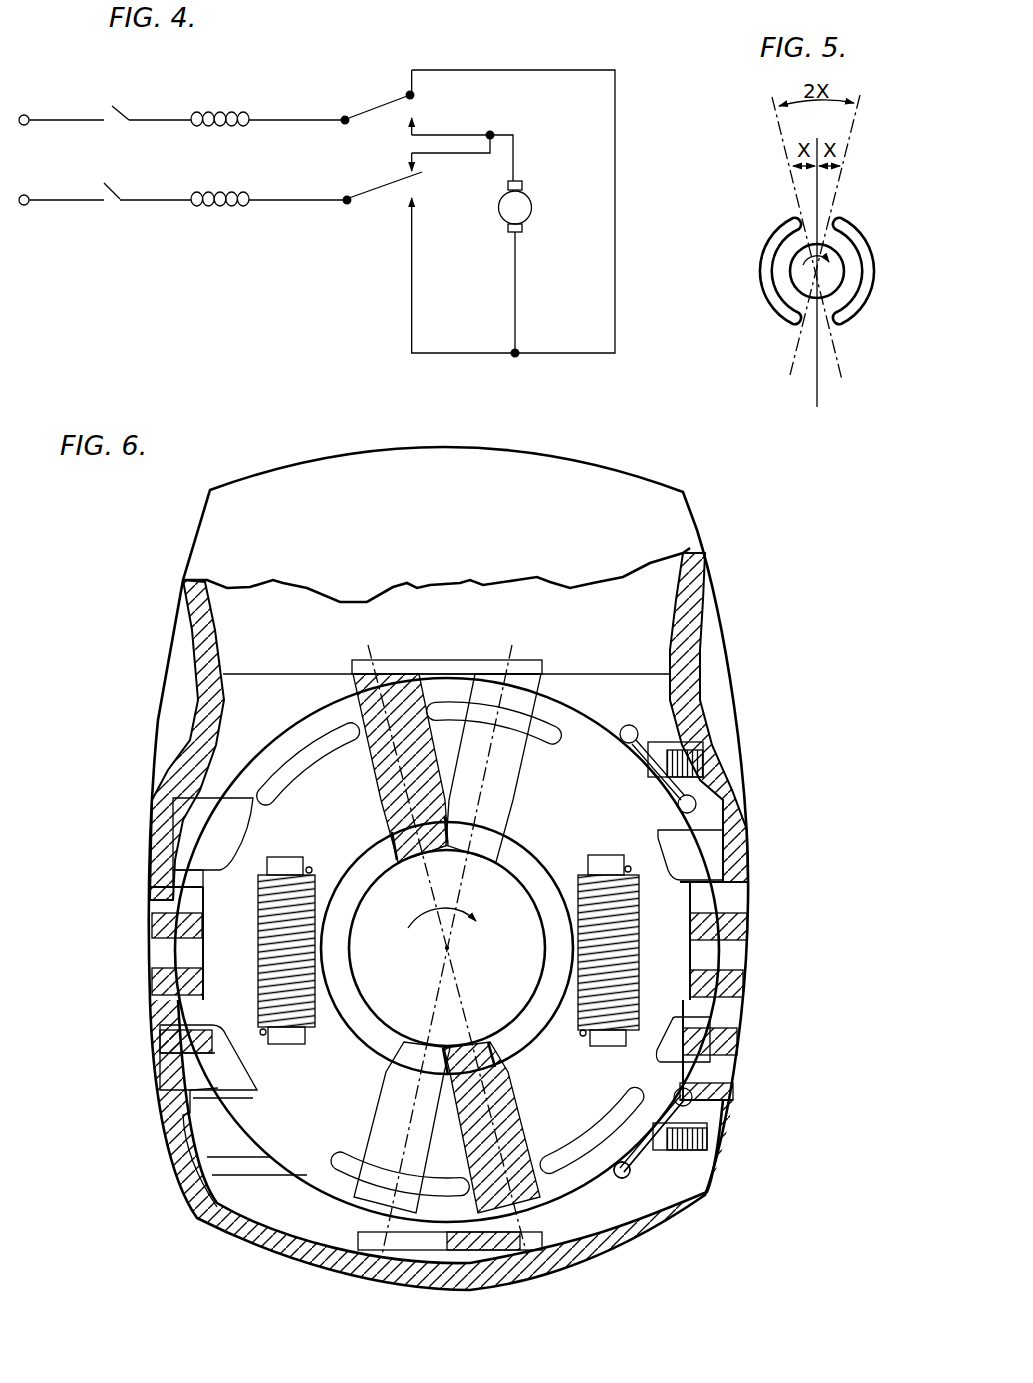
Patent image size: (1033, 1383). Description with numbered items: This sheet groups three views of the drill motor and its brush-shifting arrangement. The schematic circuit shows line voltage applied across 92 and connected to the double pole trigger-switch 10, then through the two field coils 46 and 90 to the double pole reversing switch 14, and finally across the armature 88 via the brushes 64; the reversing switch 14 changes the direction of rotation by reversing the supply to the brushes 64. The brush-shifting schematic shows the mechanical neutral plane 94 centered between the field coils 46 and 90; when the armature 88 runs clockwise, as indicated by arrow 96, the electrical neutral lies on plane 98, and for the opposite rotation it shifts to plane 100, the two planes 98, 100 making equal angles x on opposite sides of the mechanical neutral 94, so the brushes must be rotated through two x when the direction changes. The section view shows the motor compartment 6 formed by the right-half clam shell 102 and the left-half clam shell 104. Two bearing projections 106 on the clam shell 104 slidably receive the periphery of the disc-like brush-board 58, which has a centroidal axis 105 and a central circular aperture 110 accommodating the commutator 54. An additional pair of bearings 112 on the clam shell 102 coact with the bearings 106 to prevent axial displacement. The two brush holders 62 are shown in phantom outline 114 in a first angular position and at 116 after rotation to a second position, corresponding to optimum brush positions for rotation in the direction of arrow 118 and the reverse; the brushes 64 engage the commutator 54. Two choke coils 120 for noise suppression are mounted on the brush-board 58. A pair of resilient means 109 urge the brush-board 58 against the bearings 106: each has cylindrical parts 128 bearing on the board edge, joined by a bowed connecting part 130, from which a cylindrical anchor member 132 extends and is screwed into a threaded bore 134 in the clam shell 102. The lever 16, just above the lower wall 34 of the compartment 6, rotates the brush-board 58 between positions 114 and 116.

In FIG. 6, the motor compartment 6 is at (579, 457).
In FIG. 4, the trigger-switch 10 is at (109, 209).
In FIG. 4, the reversing switch 14 is at (376, 109).
In FIG. 6, the lever 16 is at (522, 1234).
In FIG. 6, the lower wall 34 is at (552, 1276).
In FIG. 4, the field coil 46 is at (257, 118).
In FIG. 5, the field coil 46 is at (774, 313).
In FIG. 6, the commutator 54 is at (414, 975).
In FIG. 6, the brush-board 58 is at (680, 905).
In FIG. 6, the brush holder 62 is at (378, 828).
In FIG. 4, the brush 64 is at (524, 184).
In FIG. 6, the brush 64 is at (410, 848).
In FIG. 4, the armature 88 is at (497, 209).
In FIG. 5, the armature 88 is at (845, 270).
In FIG. 4, the field coil 90 is at (257, 198).
In FIG. 5, the field coil 90 is at (859, 306).
In FIG. 4, the line voltage terminals 92 is at (24, 131).
In FIG. 5, the mechanical neutral plane 94 is at (819, 375).
In FIG. 5, the arrow 96 is at (818, 250).
In FIG. 5, the electrical neutral plane 98 is at (841, 360).
In FIG. 6, the electrical neutral plane 98 is at (370, 652).
In FIG. 5, the electrical neutral plane 100 is at (796, 350).
In FIG. 6, the electrical neutral plane 100 is at (524, 650).
In FIG. 6, the right-half clam shell 102 is at (705, 572).
In FIG. 6, the left-half clam shell 104 is at (180, 588).
In FIG. 6, the centroidal axis 105 is at (452, 950).
In FIG. 6, the bearing projection 106 is at (210, 837).
In FIG. 6, the resilient means 109 is at (641, 1161).
In FIG. 6, the central circular aperture 110 is at (535, 858).
In FIG. 6, the bearing 112 is at (715, 845).
In FIG. 6, the phantom outline 114 is at (360, 773).
In FIG. 6, the phantom outline 116 is at (523, 797).
In FIG. 6, the arrow 118 is at (422, 902).
In FIG. 6, the choke coil 120 is at (258, 938).
In FIG. 6, the cylindrical part 128 is at (627, 1175).
In FIG. 6, the bowed connecting part 130 is at (672, 1100).
In FIG. 6, the cylindrical anchor member 132 is at (702, 752).
In FIG. 6, the internally screw-threaded bore 134 is at (663, 738).